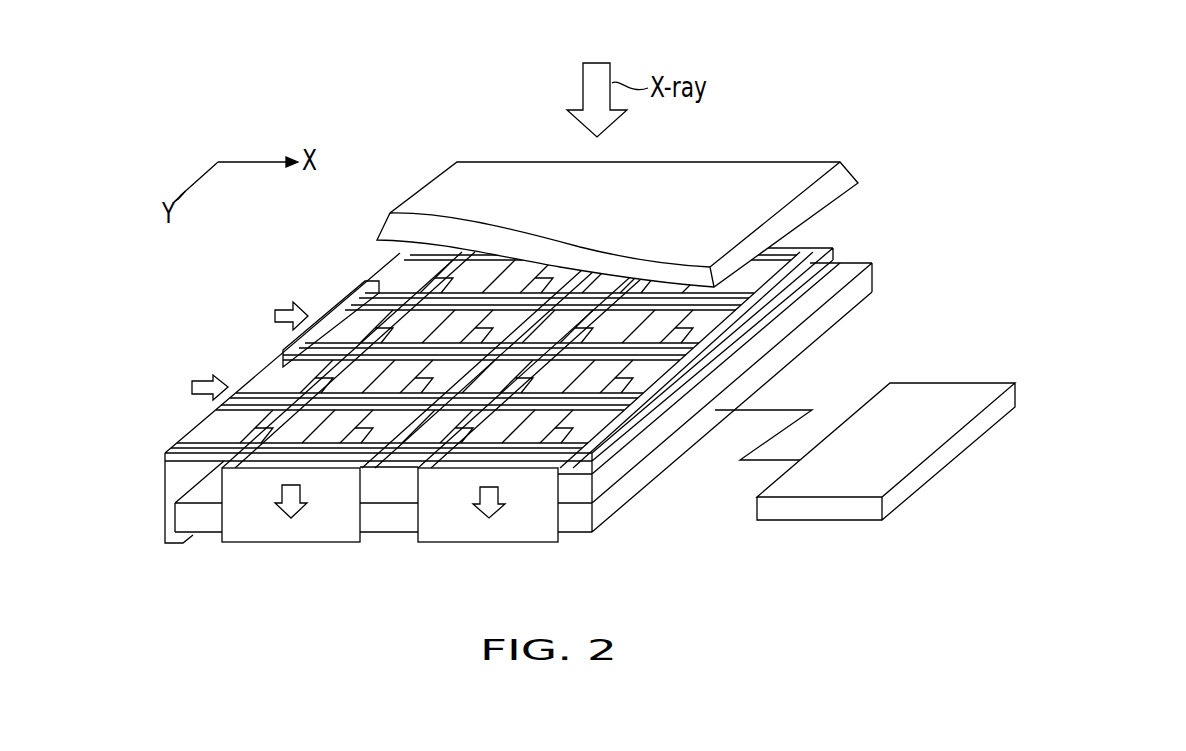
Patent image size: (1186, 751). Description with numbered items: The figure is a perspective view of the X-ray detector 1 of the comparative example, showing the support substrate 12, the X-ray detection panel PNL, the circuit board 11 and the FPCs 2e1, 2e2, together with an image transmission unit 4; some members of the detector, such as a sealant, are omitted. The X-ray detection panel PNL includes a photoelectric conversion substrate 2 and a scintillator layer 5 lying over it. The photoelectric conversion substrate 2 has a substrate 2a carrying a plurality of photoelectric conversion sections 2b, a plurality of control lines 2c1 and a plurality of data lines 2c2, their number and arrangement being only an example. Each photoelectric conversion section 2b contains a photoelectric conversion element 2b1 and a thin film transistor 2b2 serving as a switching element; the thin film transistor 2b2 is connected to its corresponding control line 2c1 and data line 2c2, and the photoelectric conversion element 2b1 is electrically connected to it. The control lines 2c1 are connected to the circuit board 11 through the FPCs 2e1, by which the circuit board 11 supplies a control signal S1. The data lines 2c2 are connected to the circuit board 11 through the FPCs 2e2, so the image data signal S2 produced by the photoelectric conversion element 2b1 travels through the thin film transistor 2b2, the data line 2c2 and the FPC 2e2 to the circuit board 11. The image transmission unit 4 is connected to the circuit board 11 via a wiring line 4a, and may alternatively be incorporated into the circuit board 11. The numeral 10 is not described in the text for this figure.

The X-ray detector 1 is at (929, 125).
The X-ray detection module 10 is at (897, 202).
The X-ray detection panel PNL is at (900, 122).
The scintillator layer 5 is at (775, 170).
The photoelectric conversion substrate 2 is at (844, 239).
The substrate 2a is at (843, 251).
The photoelectric conversion section 2b is at (470, 120).
The photoelectric conversion element 2b1 is at (417, 273).
The thin film transistor 2b2 is at (443, 280).
The control line 2c1 is at (287, 397).
The data line 2c2 is at (297, 430).
The FPC 2e1 is at (358, 290).
The FPC 2e2 is at (247, 520).
The control signal S1 is at (291, 301).
The image data signal S2 is at (307, 496).
The image transmission unit 4 is at (920, 477).
The wiring line 4a is at (747, 460).
The circuit board 11 is at (647, 468).
The support substrate 12 is at (807, 287).